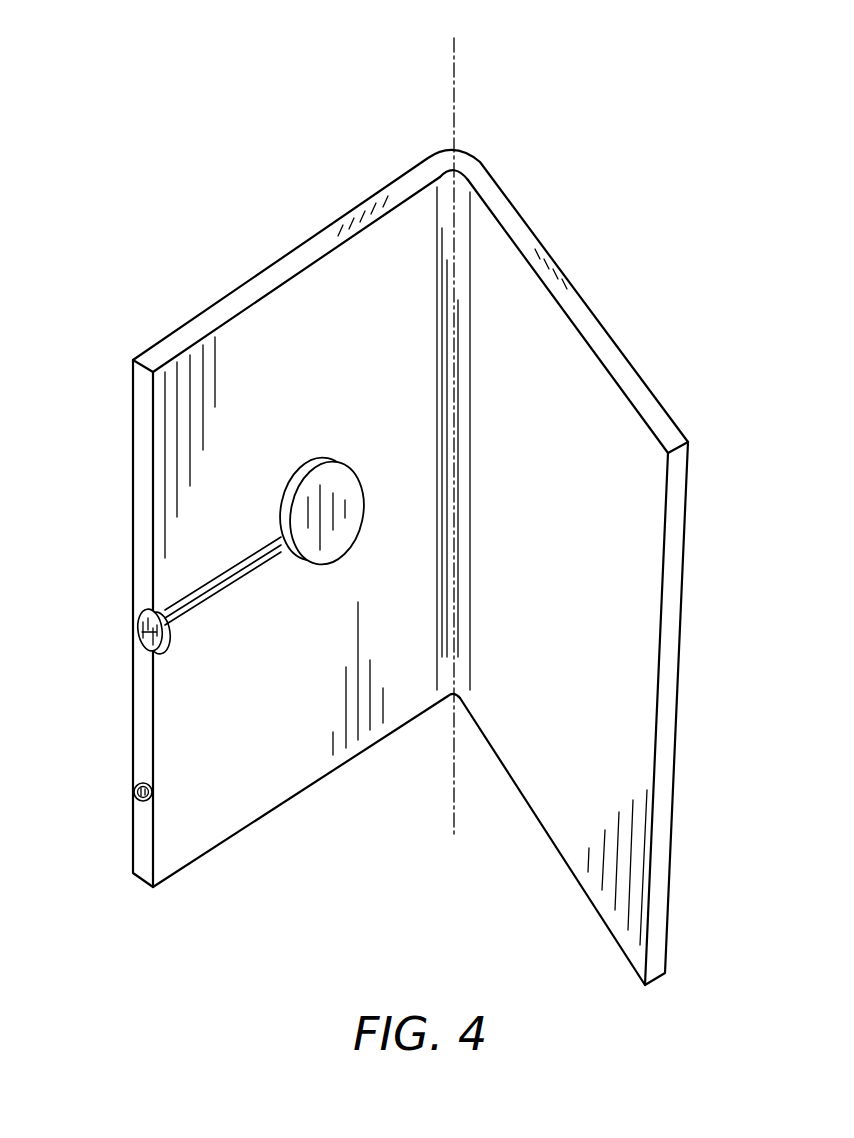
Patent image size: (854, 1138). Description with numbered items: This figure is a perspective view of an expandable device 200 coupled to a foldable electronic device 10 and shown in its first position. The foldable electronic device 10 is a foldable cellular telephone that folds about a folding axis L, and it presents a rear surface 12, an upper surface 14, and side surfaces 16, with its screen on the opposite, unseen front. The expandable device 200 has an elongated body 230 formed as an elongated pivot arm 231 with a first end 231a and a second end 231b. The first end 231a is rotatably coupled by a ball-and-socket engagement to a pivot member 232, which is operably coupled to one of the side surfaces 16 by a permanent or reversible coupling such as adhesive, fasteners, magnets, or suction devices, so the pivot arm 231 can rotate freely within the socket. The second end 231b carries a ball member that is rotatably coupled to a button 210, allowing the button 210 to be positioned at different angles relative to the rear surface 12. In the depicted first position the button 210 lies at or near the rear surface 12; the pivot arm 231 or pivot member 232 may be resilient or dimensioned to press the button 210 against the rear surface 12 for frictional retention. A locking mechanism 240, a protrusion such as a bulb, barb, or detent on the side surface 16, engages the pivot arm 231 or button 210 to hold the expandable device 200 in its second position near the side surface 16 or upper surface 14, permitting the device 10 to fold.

The foldable electronic device 10 is at (415, 567).
The rear surface 12 is at (215, 800).
The upper surface 14 is at (598, 333).
The side surfaces 16 is at (140, 845).
The expandable device 200 is at (195, 617).
The button 210 is at (312, 513).
The elongated body 230 is at (223, 578).
The pivot arm 231 is at (232, 557).
The first end 231a is at (183, 636).
The second end 231b is at (274, 560).
The pivot member 232 is at (138, 628).
The locking mechanism 240 is at (134, 792).
The folding axis L is at (455, 78).